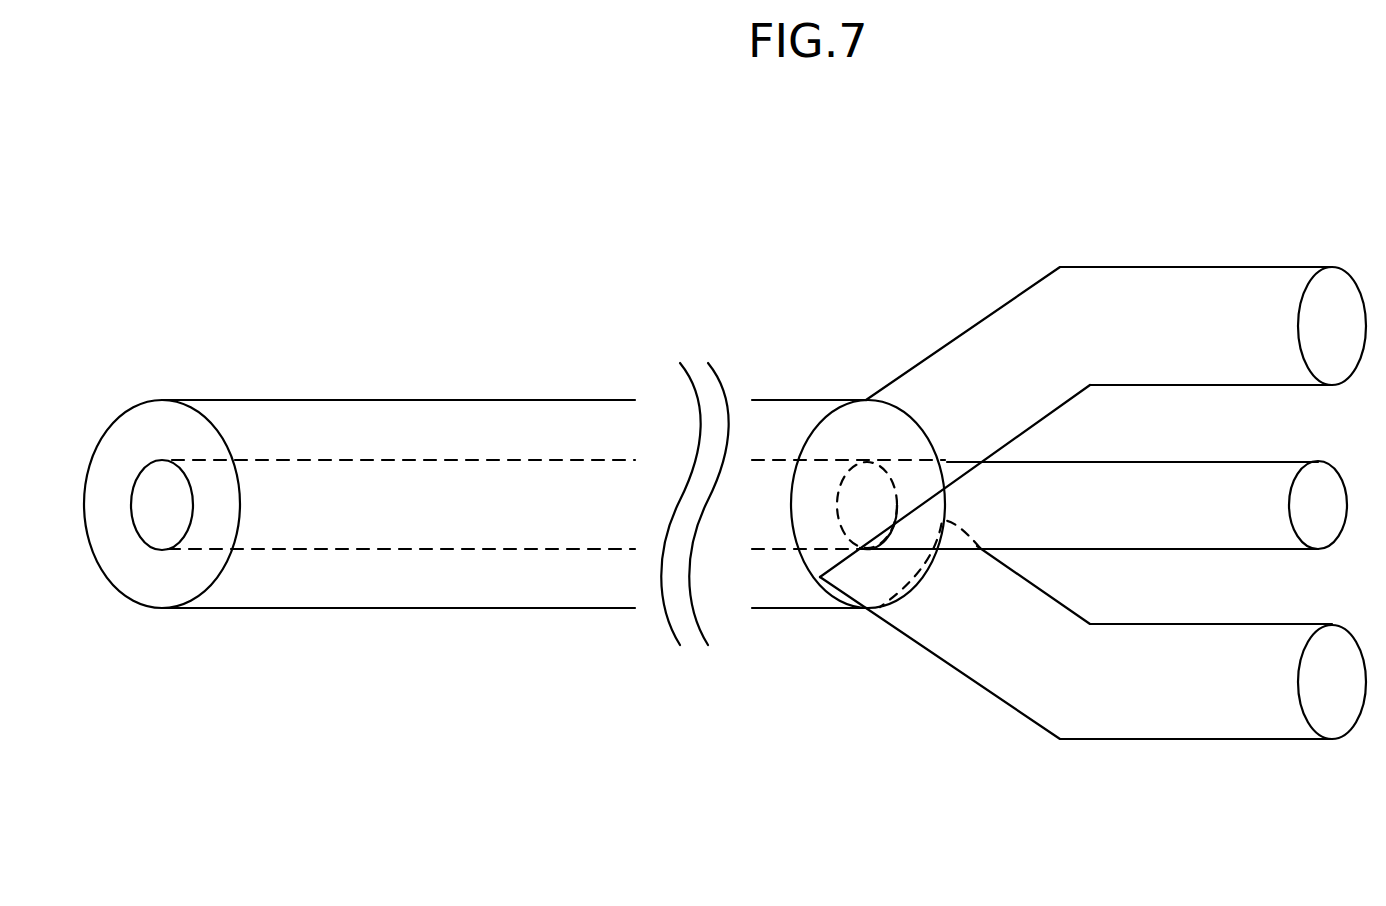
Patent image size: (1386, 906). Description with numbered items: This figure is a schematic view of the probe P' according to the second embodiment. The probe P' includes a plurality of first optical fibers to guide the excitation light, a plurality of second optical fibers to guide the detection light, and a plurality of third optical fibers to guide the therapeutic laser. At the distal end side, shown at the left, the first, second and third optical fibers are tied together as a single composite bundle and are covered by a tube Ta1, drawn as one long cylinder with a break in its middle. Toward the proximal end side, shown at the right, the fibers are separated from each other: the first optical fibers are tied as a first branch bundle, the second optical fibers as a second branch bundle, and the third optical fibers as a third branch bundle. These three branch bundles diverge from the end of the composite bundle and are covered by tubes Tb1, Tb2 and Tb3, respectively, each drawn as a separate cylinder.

The tube Ta1 is at (300, 401).
The probe P' is at (940, 382).
The tube Tb1 is at (1260, 266).
The tube Tb3 is at (1258, 461).
The tube Tb2 is at (1260, 623).